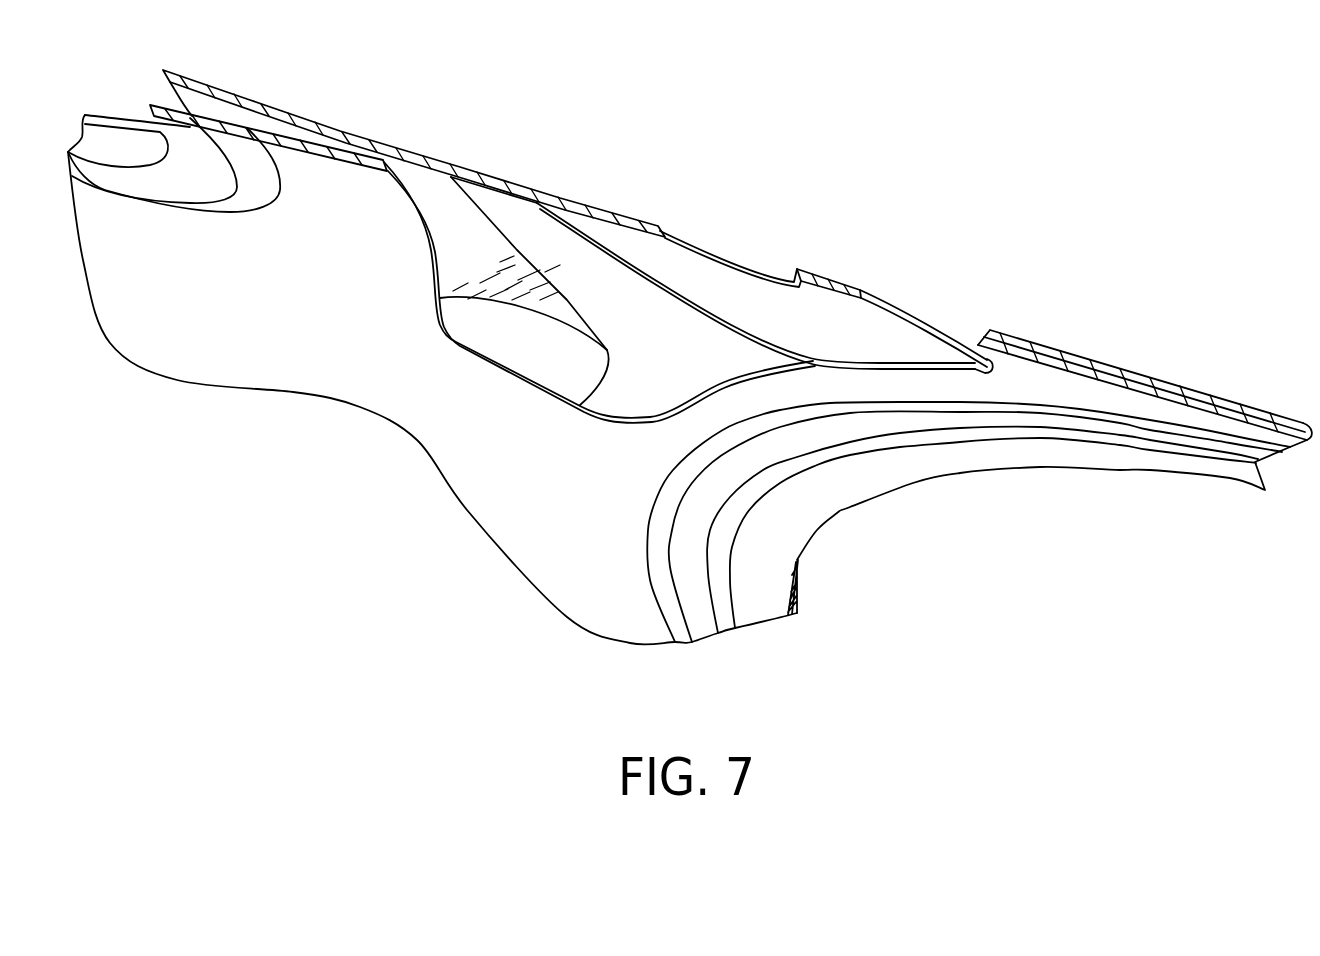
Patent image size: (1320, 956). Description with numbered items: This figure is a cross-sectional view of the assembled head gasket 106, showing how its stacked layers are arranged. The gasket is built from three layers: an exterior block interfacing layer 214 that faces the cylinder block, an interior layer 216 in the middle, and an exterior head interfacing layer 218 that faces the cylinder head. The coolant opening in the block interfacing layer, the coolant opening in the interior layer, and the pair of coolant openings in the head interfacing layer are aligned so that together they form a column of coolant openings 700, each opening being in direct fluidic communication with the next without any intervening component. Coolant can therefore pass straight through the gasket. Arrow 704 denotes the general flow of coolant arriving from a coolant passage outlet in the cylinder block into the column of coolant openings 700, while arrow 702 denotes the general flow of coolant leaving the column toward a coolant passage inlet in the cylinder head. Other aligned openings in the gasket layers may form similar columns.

The head gasket 106 is at (1046, 272).
The column of coolant openings 700 is at (527, 343).
The arrow 702 is at (952, 245).
The arrow 704 is at (635, 371).
The exterior block interfacing layer 214 is at (1194, 408).
The interior layer 216 is at (1131, 367).
The exterior head interfacing layer 218 is at (1153, 376).